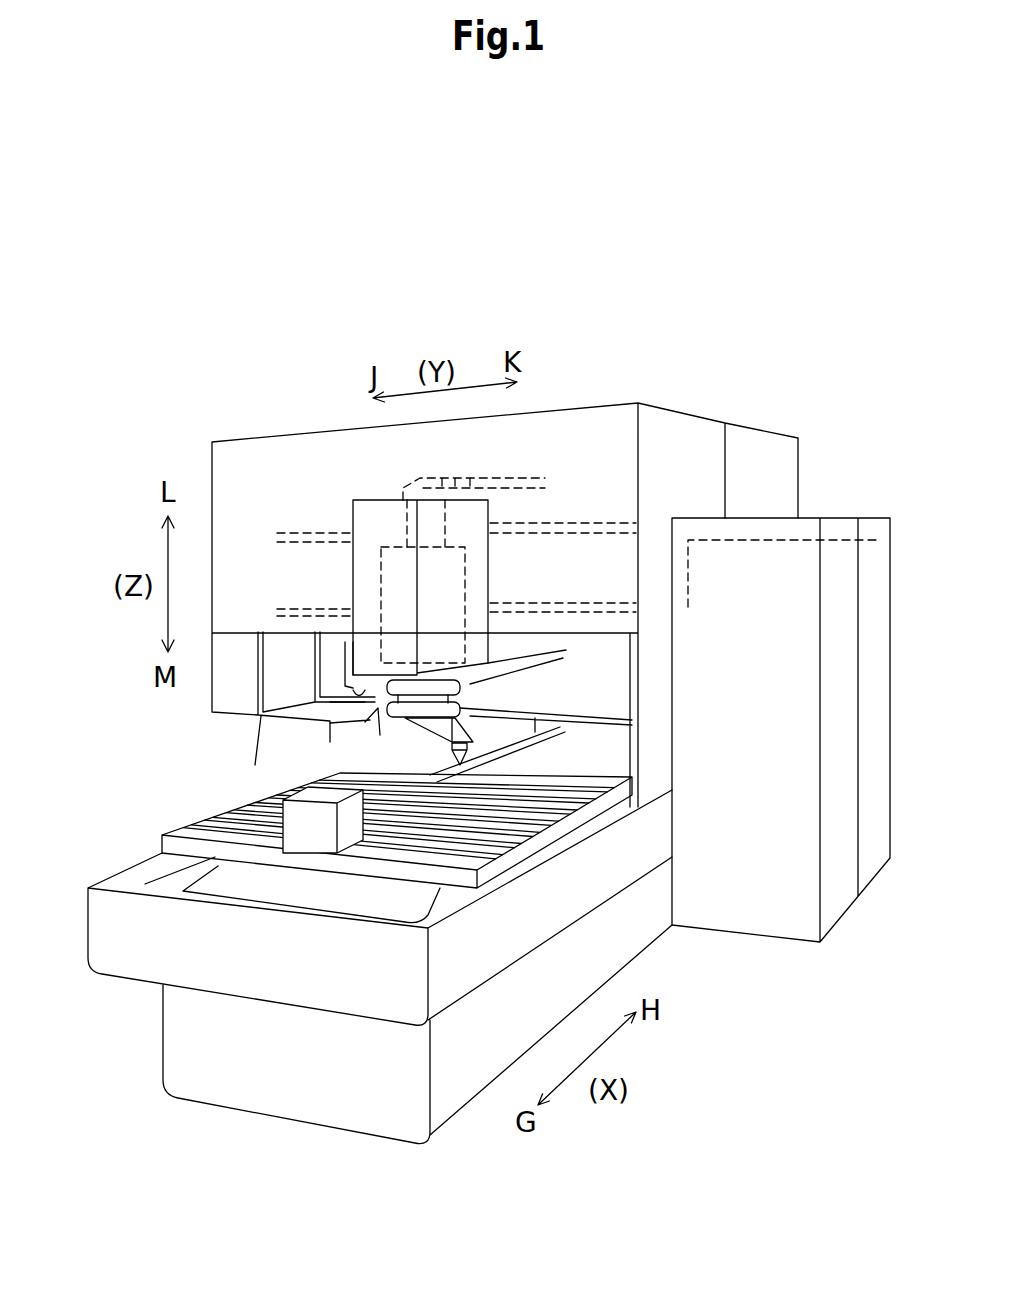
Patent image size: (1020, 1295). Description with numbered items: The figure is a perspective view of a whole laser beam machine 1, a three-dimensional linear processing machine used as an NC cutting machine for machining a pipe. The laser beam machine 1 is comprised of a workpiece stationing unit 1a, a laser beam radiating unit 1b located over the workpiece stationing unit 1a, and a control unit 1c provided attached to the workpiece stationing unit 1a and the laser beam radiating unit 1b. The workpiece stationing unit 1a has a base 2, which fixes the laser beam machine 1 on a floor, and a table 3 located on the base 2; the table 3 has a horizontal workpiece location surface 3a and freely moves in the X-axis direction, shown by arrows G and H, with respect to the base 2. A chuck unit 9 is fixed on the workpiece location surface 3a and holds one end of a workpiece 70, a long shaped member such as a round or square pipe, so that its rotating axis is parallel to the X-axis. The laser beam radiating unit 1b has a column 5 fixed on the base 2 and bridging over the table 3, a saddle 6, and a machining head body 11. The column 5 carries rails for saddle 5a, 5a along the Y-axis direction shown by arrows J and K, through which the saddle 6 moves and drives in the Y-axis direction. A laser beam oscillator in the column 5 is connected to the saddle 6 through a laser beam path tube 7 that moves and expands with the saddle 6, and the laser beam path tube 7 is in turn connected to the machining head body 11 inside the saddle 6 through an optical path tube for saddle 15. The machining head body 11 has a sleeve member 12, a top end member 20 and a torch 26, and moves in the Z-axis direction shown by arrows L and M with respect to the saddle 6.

The laser beam machine 1 is at (603, 292).
The workpiece stationing unit 1a is at (102, 839).
The laser beam radiating unit 1b is at (791, 391).
The control unit 1c is at (779, 525).
The base 2 is at (142, 1034).
The table 3 is at (166, 831).
The workpiece location surface 3a is at (213, 817).
The column 5 is at (686, 405).
The rails for saddle 5a is at (560, 605).
The saddle 6 is at (350, 583).
The laser beam path tube 7 is at (533, 460).
The chuck unit 9 is at (247, 833).
The machining head body 11 is at (370, 578).
The sleeve member 12 is at (363, 727).
The optical path tube for saddle 15 is at (403, 518).
The top end member 20 is at (470, 708).
The torch 26 is at (448, 758).
The workpiece 70 is at (500, 780).